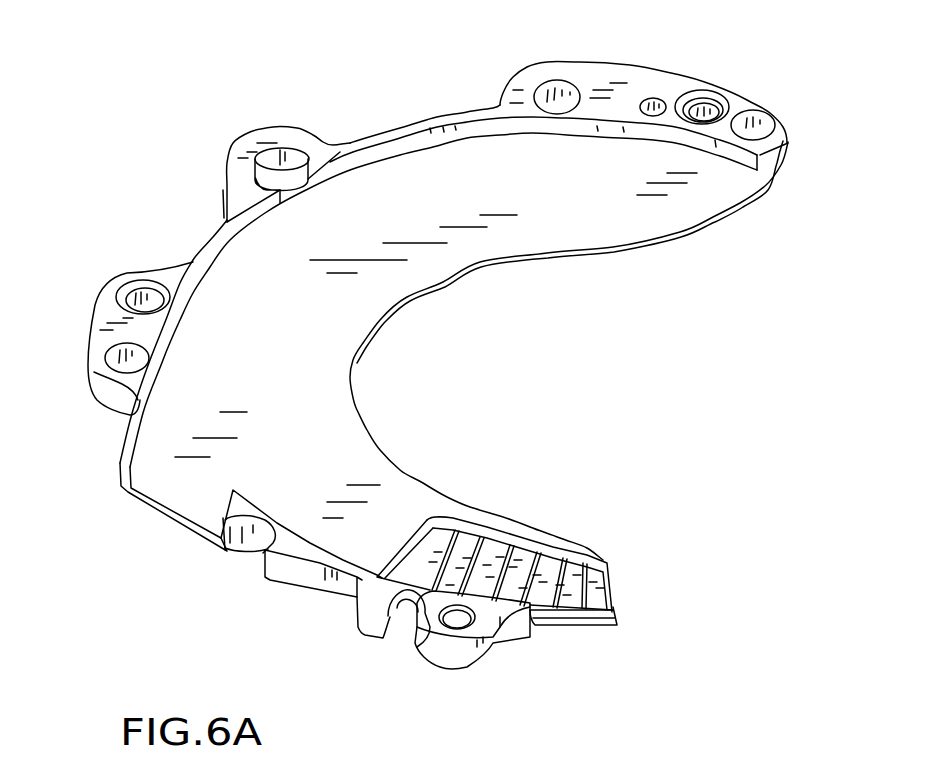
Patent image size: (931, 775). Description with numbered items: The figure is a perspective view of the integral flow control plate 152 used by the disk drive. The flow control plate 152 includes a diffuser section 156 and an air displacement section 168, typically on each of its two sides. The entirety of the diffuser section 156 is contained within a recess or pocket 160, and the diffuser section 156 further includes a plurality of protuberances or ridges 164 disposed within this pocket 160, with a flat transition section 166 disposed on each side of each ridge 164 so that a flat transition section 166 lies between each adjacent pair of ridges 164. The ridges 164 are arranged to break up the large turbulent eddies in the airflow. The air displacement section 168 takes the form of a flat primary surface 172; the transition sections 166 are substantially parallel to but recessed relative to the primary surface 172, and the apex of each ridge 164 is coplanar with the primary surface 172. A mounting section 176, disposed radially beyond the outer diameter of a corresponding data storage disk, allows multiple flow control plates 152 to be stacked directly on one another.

The flow control plate 152 is at (163, 166).
The diffuser section 156 is at (590, 665).
The pocket 160 is at (440, 513).
The ridge 164 is at (550, 560).
The flat transition section 166 is at (480, 540).
The air displacement section 168 is at (462, 305).
The primary surface 172 is at (265, 357).
The mounting section 176 is at (627, 70).